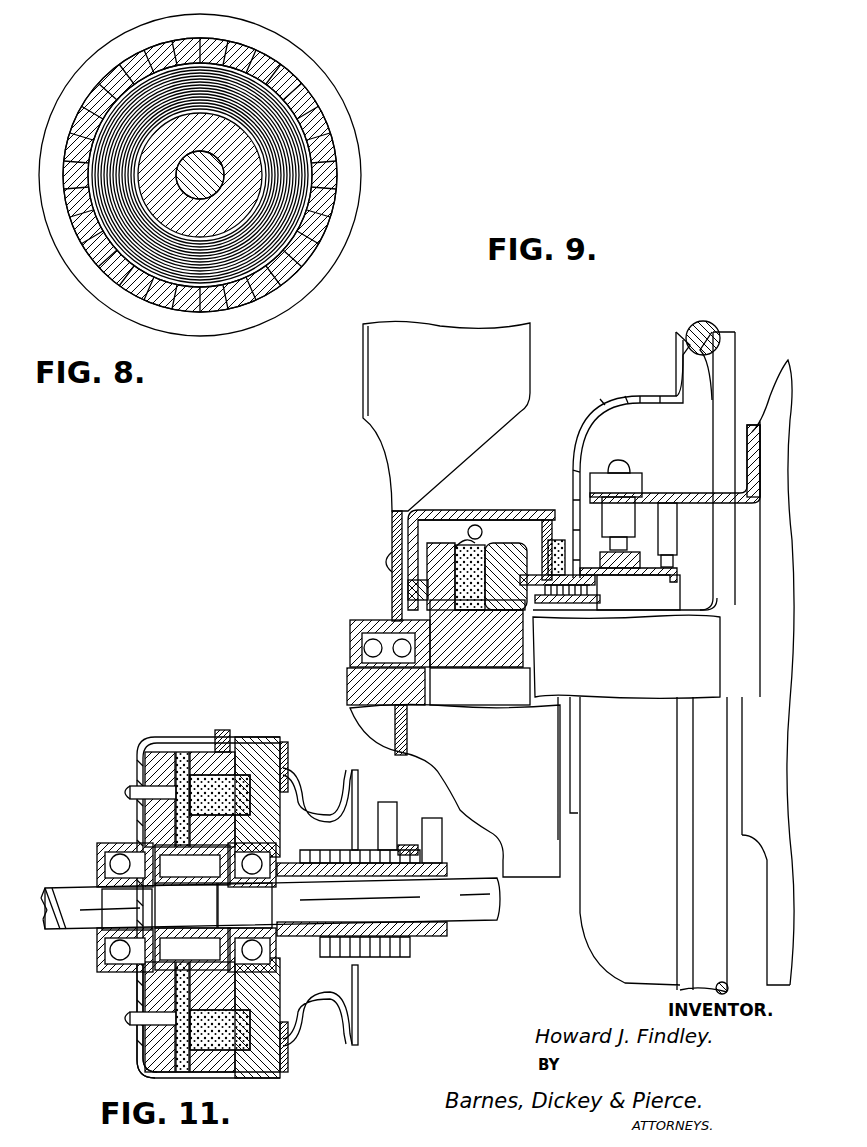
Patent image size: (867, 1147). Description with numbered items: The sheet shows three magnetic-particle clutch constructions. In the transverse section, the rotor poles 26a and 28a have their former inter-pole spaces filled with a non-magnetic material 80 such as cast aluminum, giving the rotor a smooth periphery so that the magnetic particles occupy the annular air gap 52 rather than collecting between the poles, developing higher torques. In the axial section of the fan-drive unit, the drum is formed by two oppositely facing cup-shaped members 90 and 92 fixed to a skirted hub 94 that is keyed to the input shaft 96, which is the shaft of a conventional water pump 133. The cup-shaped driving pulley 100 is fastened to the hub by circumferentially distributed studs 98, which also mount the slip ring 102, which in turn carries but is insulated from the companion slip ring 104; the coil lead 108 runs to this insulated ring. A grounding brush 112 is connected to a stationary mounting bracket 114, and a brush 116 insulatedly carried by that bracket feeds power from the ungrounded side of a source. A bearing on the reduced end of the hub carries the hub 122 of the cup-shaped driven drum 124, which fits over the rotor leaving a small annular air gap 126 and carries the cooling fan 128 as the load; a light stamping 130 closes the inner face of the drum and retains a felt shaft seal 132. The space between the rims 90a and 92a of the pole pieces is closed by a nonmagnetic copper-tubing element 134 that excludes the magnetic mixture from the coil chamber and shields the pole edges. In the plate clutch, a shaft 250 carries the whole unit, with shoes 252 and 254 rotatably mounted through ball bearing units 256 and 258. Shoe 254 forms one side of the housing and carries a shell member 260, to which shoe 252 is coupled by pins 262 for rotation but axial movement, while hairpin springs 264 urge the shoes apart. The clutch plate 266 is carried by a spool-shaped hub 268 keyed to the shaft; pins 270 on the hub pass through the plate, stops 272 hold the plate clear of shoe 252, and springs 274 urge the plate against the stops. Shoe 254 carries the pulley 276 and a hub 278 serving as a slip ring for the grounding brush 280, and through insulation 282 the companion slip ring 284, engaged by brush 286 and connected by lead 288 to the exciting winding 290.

In FIG. 8, the annular air gap 52 is at (120, 62).
In FIG. 8, the non-magnetic material 80 is at (245, 55).
In FIG. 8, the pole 26a is at (290, 72).
In FIG. 8, the pole 28a is at (335, 135).
In FIG. 9, the fan 128 is at (376, 396).
In FIG. 9, the cup-shaped driving pulley 100 is at (622, 405).
In FIG. 9, the water pump 133 is at (782, 352).
In FIG. 9, the stationary mounting bracket 114 is at (745, 440).
In FIG. 9, the brush 116 is at (630, 490).
In FIG. 9, the brush 112 is at (648, 510).
In FIG. 9, the driven drum 124 is at (495, 505).
In FIG. 9, the cup-shaped member 90 is at (520, 510).
In FIG. 9, the annular air gap 126 is at (468, 530).
In FIG. 9, the nonmagnetic element 134 is at (472, 524).
In FIG. 9, the light stamping 130 is at (568, 500).
In FIG. 9, the cup-shaped member 92 is at (396, 538).
In FIG. 9, the rim 92a is at (388, 560).
In FIG. 9, the companion slip ring 104 is at (650, 545).
In FIG. 9, the slip ring 102 is at (410, 588).
In FIG. 9, the studs 98 is at (600, 588).
In FIG. 9, the coil lead 108 is at (645, 612).
In FIG. 9, the rim 90a is at (480, 612).
In FIG. 9, the shaft seal 132 is at (540, 608).
In FIG. 9, the hub 122 is at (350, 627).
In FIG. 9, the skirted hub 94 is at (497, 660).
In FIG. 9, the input shaft 96 is at (465, 695).
In FIG. 11, the hairpin springs 264 is at (188, 745).
In FIG. 11, the shell member 260 is at (208, 745).
In FIG. 11, the shoe 254 is at (262, 748).
In FIG. 11, the exciting winding 290 is at (286, 758).
In FIG. 11, the shoe 252 is at (150, 762).
In FIG. 11, the lead 288 is at (290, 778).
In FIG. 11, the pulley 276 is at (360, 780).
In FIG. 11, the brush 286 is at (388, 803).
In FIG. 11, the companion slip ring 284 is at (404, 845).
In FIG. 11, the pins 262 is at (130, 792).
In FIG. 11, the springs 274 is at (272, 815).
In FIG. 11, the clutch plate 266 is at (150, 838).
In FIG. 11, the grounding brush 280 is at (434, 840).
In FIG. 11, the ball bearing unit 256 is at (100, 860).
In FIG. 11, the shaft 250 is at (498, 903).
In FIG. 11, the spool-shaped hub 268 is at (158, 892).
In FIG. 11, the stops 272 is at (168, 930).
In FIG. 11, the ball bearing unit 258 is at (240, 878).
In FIG. 11, the hub 278 is at (445, 936).
In FIG. 11, the insulation 282 is at (400, 958).
In FIG. 11, the pins 270 is at (142, 994).